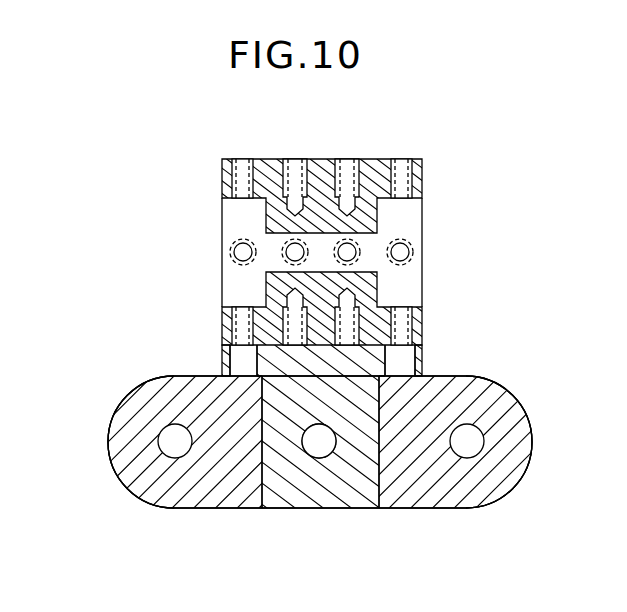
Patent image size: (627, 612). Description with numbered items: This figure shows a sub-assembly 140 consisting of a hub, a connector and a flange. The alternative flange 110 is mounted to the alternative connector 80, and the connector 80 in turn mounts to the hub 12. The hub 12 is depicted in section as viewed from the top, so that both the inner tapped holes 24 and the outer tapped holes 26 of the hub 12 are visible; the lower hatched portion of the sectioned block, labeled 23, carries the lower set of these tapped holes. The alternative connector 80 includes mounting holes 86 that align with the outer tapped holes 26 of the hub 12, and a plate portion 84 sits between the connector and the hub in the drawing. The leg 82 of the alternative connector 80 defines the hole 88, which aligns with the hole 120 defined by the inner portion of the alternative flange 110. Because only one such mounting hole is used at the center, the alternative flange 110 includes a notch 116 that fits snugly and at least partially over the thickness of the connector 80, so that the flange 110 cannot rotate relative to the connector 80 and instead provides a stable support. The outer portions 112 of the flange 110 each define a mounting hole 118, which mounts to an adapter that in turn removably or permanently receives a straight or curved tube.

The hub 12 is at (430, 163).
The lower clamp block 23 is at (422, 315).
The inner tapped holes 24 is at (347, 159).
The outer tapped holes 26 is at (240, 158).
The alternative connector 80 is at (366, 516).
The leg 82 is at (287, 490).
The mounting plate 84 is at (422, 368).
The mounting holes 86 is at (222, 360).
The hole 88 is at (318, 460).
The alternative flange 110 is at (534, 417).
The outer portions 112 is at (190, 508).
The notch 116 is at (262, 482).
The mounting hole 118 is at (175, 423).
The hole 120 is at (334, 515).
The sub-assembly 140 is at (498, 189).